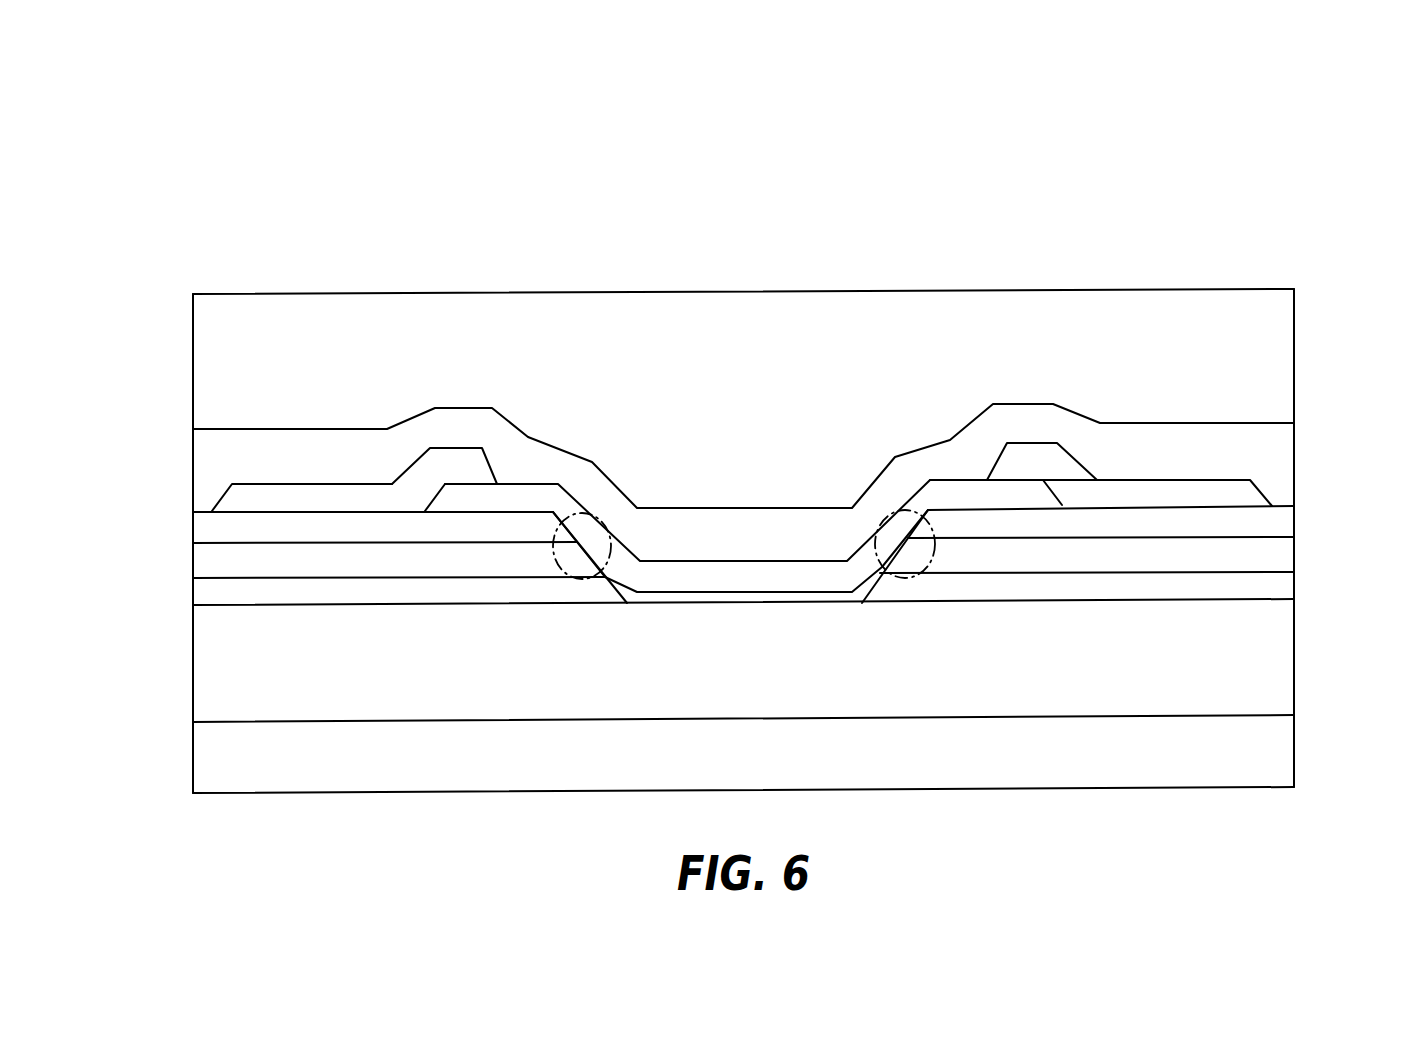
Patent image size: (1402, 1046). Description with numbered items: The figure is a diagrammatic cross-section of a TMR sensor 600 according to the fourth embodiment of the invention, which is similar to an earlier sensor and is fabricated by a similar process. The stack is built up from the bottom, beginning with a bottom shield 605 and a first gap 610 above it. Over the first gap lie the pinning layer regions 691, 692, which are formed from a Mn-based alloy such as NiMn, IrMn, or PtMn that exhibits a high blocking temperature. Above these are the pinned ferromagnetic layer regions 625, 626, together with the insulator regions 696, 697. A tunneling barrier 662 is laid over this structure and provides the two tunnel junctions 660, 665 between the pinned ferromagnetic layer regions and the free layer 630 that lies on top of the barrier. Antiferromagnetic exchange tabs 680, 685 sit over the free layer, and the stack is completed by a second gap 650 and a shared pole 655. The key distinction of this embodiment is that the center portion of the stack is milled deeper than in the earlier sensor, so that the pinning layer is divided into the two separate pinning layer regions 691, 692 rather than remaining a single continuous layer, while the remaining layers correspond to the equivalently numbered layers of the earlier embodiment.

The TMR sensor 600 is at (1130, 215).
The bottom shield 605 is at (1263, 765).
The first gap 610 is at (1263, 700).
The pinned ferromagnetic layer region 625 is at (223, 561).
The pinned ferromagnetic layer region 626 is at (1265, 565).
The free layer 630 is at (947, 478).
The second gap 650 is at (1265, 460).
The shared pole 655 is at (1265, 375).
The tunnel junction 660 is at (578, 577).
The tunneling barrier 662 is at (698, 597).
The tunnel junction 665 is at (925, 575).
The antiferromagnetic exchange tab 680 is at (1077, 458).
The antiferromagnetic exchange tab 685 is at (413, 463).
The pinning layer region 691 is at (1265, 588).
The pinning layer region 692 is at (217, 594).
The insulator region 696 is at (222, 523).
The insulator region 697 is at (1265, 532).